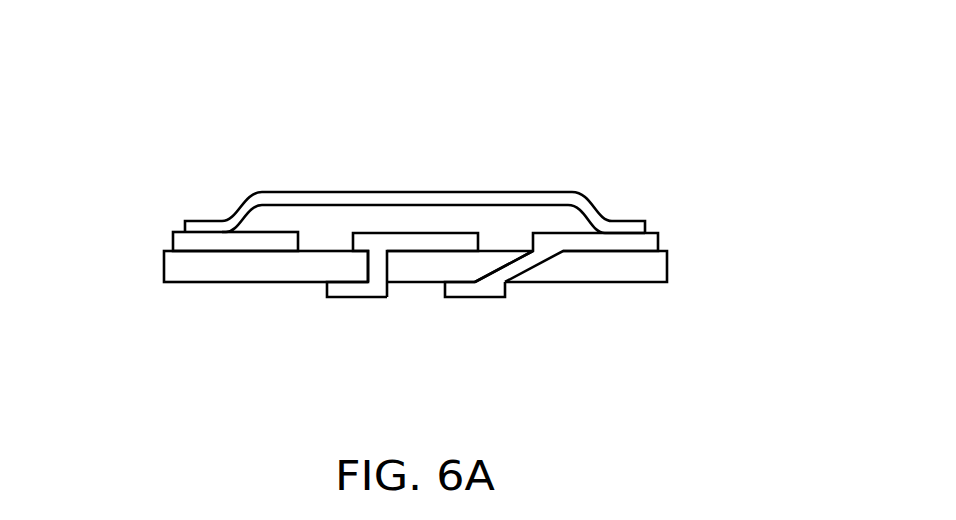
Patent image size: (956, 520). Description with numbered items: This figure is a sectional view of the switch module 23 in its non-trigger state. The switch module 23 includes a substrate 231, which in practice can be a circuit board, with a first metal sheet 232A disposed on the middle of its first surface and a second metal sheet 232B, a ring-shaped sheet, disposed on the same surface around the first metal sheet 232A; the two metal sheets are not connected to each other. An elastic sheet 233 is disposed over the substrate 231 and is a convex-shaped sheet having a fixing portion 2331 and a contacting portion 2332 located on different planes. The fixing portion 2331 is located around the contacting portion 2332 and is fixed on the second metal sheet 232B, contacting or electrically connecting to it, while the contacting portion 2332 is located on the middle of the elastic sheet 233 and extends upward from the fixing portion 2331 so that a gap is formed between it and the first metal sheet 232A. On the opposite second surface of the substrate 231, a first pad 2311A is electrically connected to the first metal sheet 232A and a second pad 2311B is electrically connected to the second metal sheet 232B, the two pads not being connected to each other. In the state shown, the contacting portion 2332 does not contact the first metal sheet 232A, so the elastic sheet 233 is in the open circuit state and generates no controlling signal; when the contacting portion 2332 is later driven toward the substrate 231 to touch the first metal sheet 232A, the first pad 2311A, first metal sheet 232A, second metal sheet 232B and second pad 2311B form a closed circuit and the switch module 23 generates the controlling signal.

The switch module 23 is at (415, 98).
The substrate 231 is at (180, 266).
The first pad 2311A is at (345, 290).
The second pad 2311B is at (493, 287).
The first metal sheet 232A is at (417, 243).
The second metal sheet 232B is at (647, 243).
The elastic sheet 233 is at (502, 192).
The fixing portion 2331 is at (203, 224).
The contacting portion 2332 is at (340, 200).